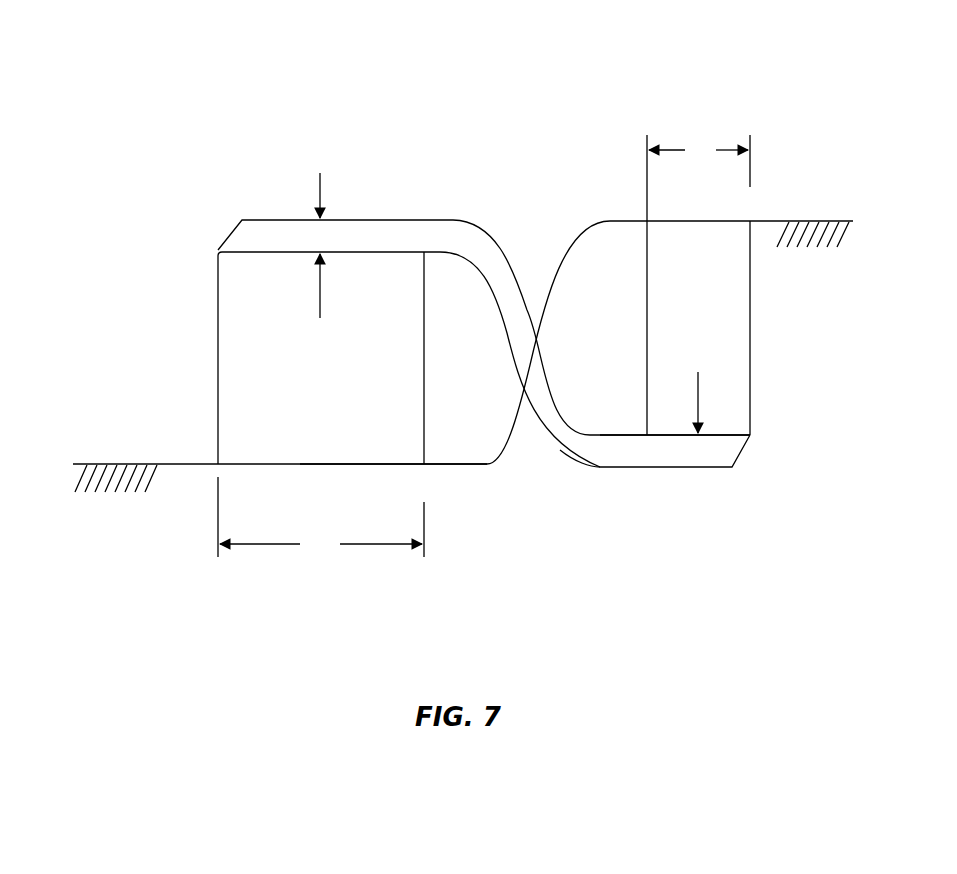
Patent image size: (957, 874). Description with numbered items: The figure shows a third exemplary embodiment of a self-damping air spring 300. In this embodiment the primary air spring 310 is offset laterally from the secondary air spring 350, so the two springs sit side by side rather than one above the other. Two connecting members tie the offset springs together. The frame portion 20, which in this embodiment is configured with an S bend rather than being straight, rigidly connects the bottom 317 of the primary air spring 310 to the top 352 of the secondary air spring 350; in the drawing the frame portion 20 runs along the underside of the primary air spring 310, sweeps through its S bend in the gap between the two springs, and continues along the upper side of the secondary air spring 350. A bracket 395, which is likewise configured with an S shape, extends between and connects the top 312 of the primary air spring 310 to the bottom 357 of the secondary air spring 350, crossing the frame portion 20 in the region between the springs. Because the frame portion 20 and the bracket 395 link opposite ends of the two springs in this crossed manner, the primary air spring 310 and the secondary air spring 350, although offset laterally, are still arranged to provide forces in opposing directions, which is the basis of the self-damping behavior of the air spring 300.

The air spring 300 is at (364, 60).
The primary air spring 310 is at (172, 329).
The top of the primary air spring 312 is at (257, 252).
The bottom of the primary air spring 317 is at (383, 464).
The frame portion 20 is at (122, 464).
The secondary air spring 350 is at (778, 338).
The top of the secondary air spring 352 is at (733, 221).
The bottom of the secondary air spring 357 is at (723, 435).
The bracket 395 is at (582, 452).